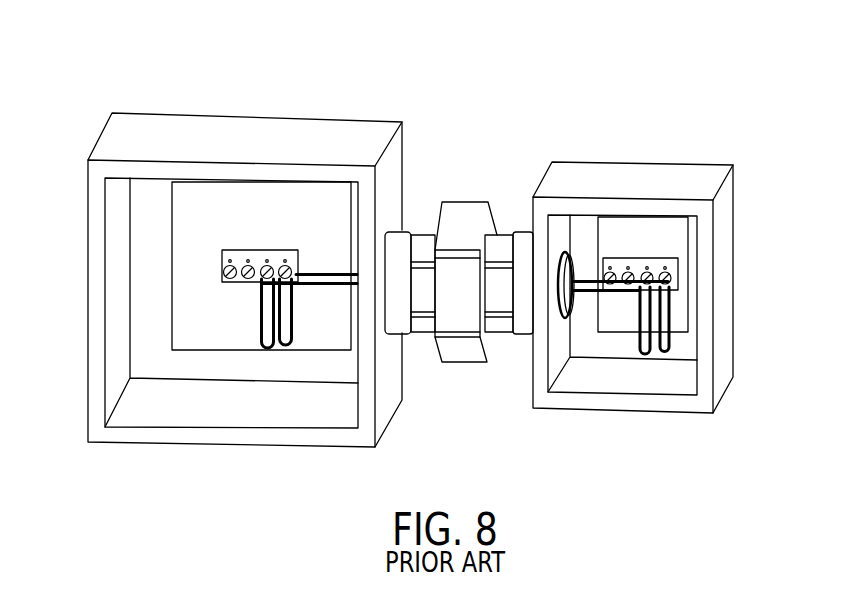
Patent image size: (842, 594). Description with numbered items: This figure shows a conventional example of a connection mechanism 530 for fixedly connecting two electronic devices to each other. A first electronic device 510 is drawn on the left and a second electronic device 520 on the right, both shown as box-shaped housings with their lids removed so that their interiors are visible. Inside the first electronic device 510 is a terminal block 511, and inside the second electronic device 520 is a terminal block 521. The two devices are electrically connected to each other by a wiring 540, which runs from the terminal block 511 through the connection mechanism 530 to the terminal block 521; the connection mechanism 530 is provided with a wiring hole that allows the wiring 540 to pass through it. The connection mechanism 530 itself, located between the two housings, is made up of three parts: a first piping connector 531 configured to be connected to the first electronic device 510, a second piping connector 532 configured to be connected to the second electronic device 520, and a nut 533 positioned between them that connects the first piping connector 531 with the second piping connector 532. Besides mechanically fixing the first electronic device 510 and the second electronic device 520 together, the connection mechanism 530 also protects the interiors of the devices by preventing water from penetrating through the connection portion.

The first electronic device 510 is at (292, 128).
The terminal block 511 is at (262, 250).
The wiring 540 is at (328, 278).
The connection mechanism 530 is at (518, 199).
The first piping connector 531 is at (433, 335).
The second piping connector 532 is at (497, 334).
The nut 533 is at (472, 353).
The second electronic device 520 is at (643, 175).
The terminal block 521 is at (633, 257).